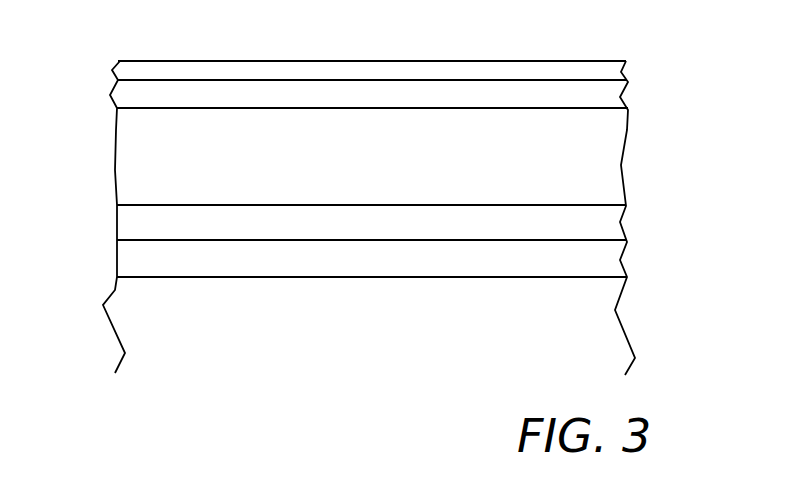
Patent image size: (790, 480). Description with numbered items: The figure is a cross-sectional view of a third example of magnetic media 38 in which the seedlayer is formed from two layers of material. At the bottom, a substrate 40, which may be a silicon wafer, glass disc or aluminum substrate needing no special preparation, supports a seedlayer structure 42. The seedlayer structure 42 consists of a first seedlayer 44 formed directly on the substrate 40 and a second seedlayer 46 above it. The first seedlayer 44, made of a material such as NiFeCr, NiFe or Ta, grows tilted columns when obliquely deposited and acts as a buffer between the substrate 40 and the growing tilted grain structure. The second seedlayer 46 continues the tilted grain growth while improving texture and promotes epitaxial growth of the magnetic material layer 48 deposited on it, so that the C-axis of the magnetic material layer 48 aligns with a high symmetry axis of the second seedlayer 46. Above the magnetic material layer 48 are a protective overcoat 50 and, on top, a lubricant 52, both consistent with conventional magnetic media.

The magnetic media 38 is at (190, 40).
The lubricant 52 is at (402, 72).
The protective overcoat 50 is at (593, 92).
The magnetic material layer 48 is at (593, 164).
The seedlayer structure 42 is at (640, 206).
The second seedlayer 46 is at (157, 222).
The first seedlayer 44 is at (148, 260).
The substrate 40 is at (163, 325).